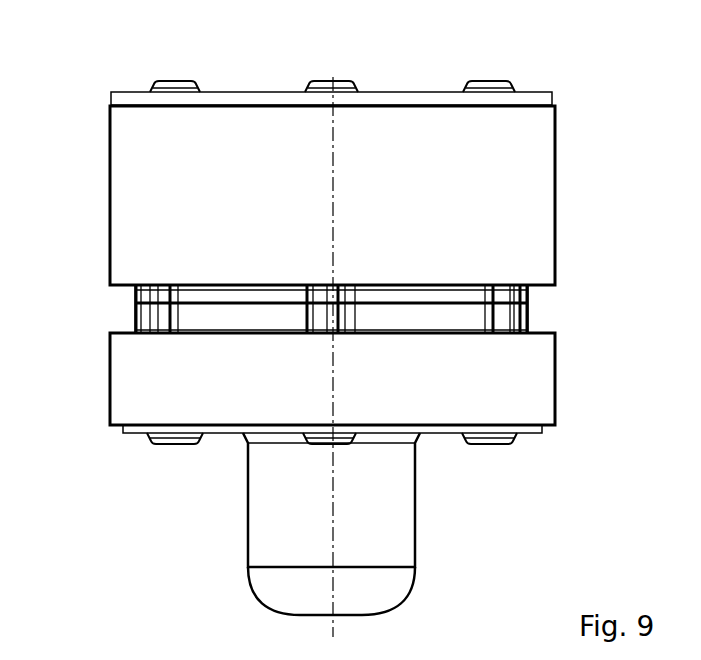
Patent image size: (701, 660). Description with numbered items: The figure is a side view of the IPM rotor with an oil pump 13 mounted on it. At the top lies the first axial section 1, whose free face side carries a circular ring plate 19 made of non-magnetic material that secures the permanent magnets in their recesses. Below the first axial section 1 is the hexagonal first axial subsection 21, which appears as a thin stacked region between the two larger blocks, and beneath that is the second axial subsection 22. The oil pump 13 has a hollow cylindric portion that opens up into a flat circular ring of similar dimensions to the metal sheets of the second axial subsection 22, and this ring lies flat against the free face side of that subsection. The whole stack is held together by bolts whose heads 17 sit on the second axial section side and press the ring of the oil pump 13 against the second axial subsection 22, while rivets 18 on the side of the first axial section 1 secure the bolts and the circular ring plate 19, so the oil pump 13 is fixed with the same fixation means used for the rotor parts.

The first axial section 1 is at (566, 107).
The circular ring plate 19 is at (248, 102).
The rivets 18 is at (497, 80).
The first axial subsection 21 is at (100, 285).
The second axial subsection 22 is at (92, 337).
The heads 17 is at (485, 443).
The oil pump 13 is at (248, 543).